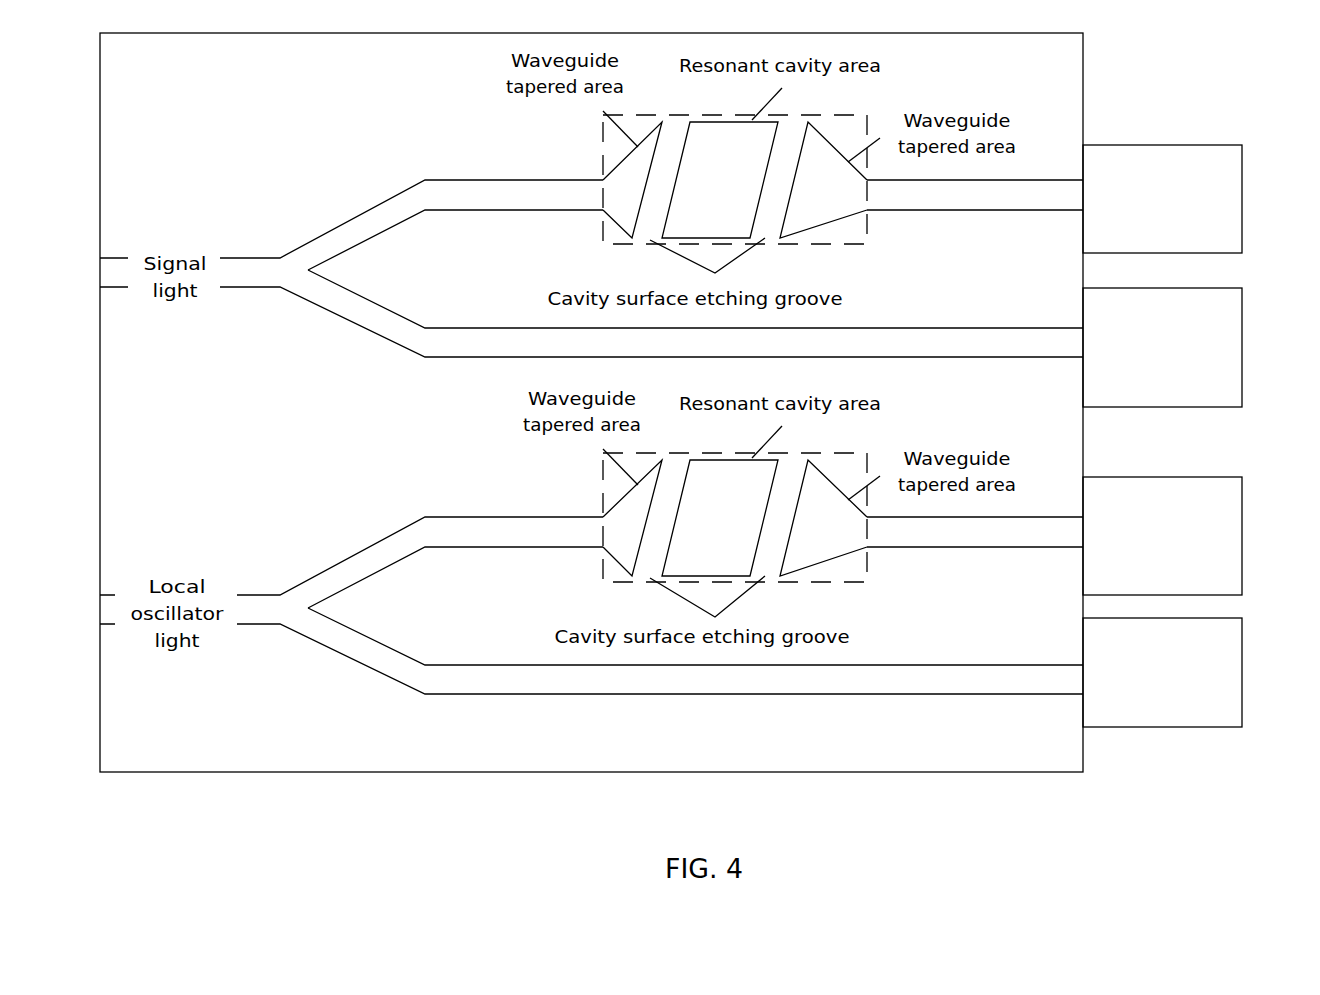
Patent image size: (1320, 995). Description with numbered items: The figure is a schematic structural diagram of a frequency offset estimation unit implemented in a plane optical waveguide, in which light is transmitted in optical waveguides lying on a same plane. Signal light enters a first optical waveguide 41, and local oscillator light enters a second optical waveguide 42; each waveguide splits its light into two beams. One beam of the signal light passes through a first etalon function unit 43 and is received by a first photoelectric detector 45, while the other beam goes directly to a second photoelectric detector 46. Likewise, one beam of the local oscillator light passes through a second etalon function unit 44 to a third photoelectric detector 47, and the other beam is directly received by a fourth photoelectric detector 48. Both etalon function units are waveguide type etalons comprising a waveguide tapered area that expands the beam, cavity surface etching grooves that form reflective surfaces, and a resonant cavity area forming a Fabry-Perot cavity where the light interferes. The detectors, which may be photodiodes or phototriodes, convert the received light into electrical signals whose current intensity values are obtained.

The first optical waveguide 41 is at (247, 272).
The second optical waveguide 42 is at (248, 612).
The first etalon function unit 43 is at (855, 245).
The second etalon function unit 44 is at (855, 583).
The first photoelectric detector 45 is at (1242, 200).
The second photoelectric detector 46 is at (1242, 348).
The third photoelectric detector 47 is at (1242, 538).
The fourth photoelectric detector 48 is at (1242, 682).